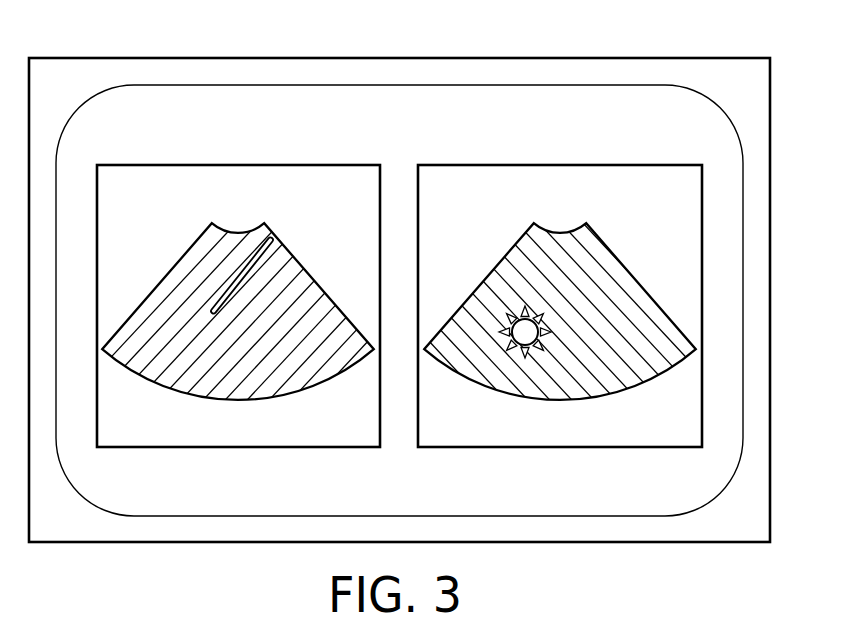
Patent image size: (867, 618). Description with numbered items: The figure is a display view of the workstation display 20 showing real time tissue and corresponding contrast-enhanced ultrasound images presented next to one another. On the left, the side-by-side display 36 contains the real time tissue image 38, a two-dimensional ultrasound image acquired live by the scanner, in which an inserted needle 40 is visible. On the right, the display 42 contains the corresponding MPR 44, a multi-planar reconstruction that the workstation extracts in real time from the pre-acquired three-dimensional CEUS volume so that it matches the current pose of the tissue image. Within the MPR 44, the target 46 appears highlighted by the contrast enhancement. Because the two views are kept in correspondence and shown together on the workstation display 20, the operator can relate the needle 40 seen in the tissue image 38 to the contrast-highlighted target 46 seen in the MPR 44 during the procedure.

The workstation display 20 is at (727, 82).
The side-by-side display 36 is at (178, 435).
The real time tissue image 38 is at (305, 373).
The inserted needle 40 is at (273, 240).
The display 42 is at (501, 435).
The corresponding MPR 44 is at (628, 373).
The target 46 is at (522, 320).